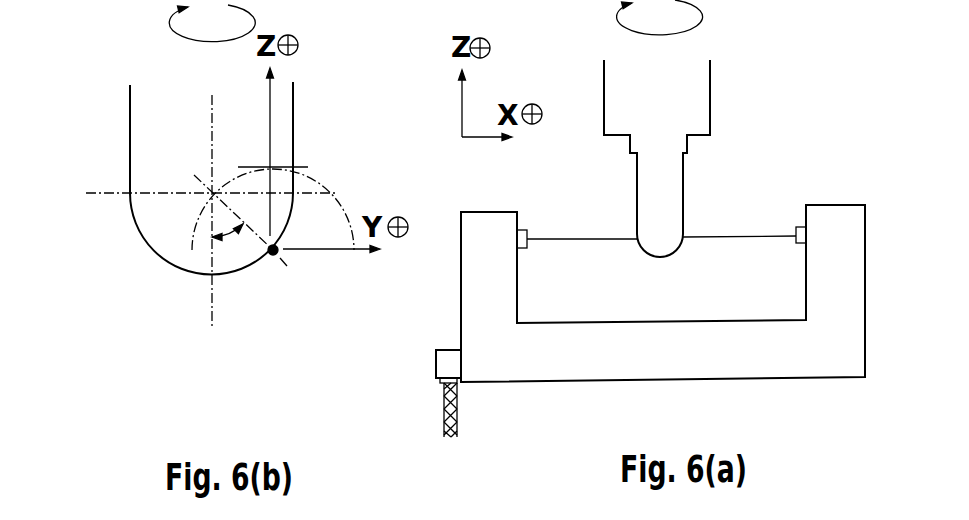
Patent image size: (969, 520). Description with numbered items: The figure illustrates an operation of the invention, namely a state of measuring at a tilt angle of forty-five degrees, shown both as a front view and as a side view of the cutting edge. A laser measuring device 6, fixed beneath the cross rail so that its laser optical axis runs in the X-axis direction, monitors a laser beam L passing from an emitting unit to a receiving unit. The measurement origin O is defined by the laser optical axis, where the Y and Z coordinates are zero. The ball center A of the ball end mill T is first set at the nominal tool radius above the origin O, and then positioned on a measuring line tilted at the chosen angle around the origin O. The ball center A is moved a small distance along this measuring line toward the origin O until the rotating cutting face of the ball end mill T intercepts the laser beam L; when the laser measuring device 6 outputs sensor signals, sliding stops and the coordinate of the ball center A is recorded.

In FIG. 6A, the ball end mill T is at (687, 87).
In FIG. 6B, the ball end mill T is at (155, 130).
In FIG. 6A, the laser beam L is at (568, 233).
In FIG. 6B, the laser beam L is at (281, 253).
In FIG. 6A, the laser measuring device 6 is at (777, 210).
In FIG. 6B, the ball center A is at (32, 340).
In FIG. 6B, the origin (laser optical axis) O is at (372, 367).